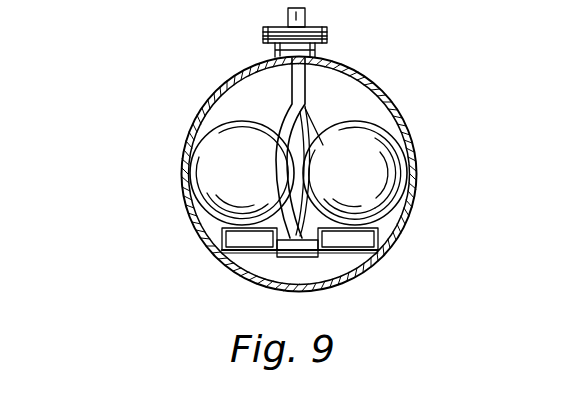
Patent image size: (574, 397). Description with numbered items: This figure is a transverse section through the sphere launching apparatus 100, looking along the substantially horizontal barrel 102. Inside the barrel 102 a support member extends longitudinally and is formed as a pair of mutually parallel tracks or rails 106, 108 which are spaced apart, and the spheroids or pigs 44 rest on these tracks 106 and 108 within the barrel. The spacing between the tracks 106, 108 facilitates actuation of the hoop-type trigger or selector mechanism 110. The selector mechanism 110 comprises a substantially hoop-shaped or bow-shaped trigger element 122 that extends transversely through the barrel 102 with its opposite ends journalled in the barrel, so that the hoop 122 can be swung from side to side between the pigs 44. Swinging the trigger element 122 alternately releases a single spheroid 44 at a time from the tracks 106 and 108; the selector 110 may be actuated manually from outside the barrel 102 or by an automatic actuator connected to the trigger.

The sphere launching apparatus 100 is at (178, 162).
The barrel 102 is at (404, 118).
The pig 44 is at (382, 175).
The track 106 is at (348, 256).
The track 108 is at (247, 256).
The selector mechanism 110 is at (318, 50).
The trigger element 122 is at (300, 140).